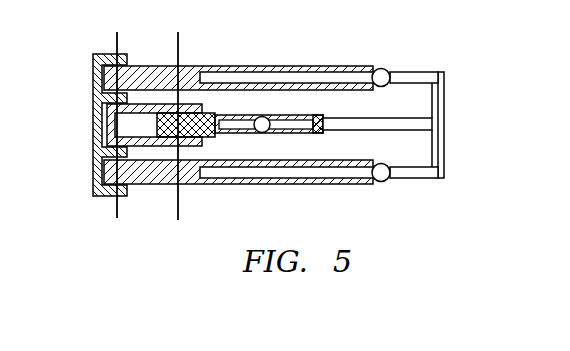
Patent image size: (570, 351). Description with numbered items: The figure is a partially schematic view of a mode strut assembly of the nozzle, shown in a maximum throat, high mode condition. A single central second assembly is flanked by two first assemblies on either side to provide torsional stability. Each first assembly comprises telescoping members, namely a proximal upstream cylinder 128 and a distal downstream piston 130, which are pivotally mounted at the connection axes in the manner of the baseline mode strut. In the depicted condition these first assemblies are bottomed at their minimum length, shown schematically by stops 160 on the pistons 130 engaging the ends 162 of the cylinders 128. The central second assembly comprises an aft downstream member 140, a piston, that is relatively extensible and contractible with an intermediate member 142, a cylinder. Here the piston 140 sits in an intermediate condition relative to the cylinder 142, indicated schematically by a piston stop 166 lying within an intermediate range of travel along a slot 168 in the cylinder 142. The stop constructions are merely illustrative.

The first telescoping member 128 is at (295, 66).
The second telescoping member 130 is at (434, 72).
The downstream member 140 is at (413, 118).
The intermediate member 142 is at (278, 114).
The stop 160 is at (392, 72).
The cylinder end 162 is at (376, 69).
The piston stop 166 is at (263, 133).
The slot 168 is at (232, 126).